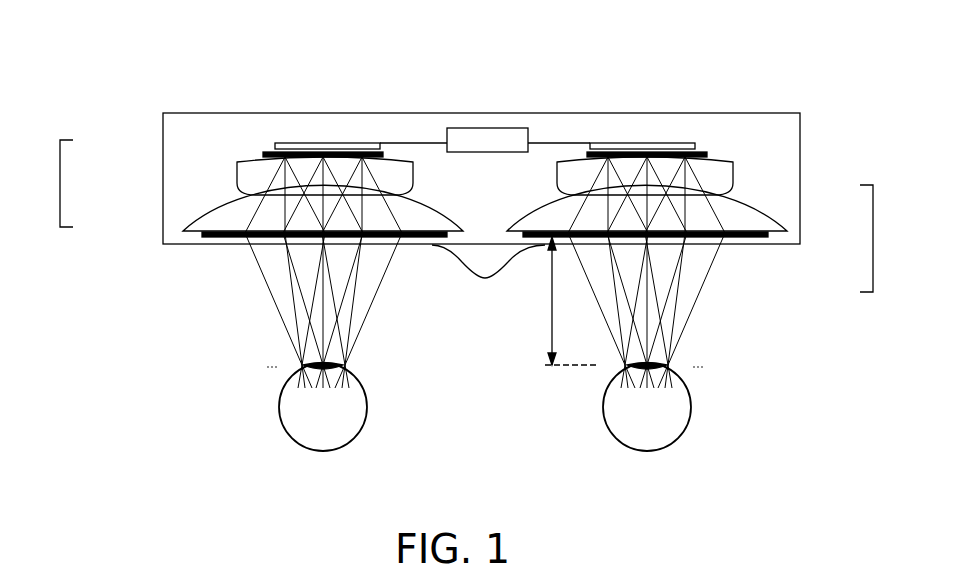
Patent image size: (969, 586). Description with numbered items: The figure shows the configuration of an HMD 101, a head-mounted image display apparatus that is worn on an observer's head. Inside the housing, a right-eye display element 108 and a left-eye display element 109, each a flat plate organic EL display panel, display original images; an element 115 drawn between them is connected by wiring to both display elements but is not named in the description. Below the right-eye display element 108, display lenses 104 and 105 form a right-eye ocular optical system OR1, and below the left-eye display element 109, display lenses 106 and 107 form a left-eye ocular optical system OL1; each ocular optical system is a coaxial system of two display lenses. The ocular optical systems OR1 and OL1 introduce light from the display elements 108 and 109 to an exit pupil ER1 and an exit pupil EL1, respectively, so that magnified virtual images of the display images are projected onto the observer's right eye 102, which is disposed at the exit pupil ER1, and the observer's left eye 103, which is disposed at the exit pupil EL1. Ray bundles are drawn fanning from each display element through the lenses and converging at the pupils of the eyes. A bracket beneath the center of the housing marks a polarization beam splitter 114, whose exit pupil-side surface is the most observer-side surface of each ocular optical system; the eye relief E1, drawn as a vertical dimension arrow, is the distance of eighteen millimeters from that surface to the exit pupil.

The HMD 101 is at (203, 133).
The observer's right eye 102 is at (660, 407).
The observer's left eye 103 is at (337, 407).
The display lens 104 is at (770, 232).
The display lens 105 is at (720, 163).
The display lens 106 is at (203, 225).
The display lens 107 is at (240, 178).
The right-eye display element 108 is at (700, 143).
The left-eye display element 109 is at (296, 143).
The polarization beam splitter 114 is at (488, 279).
The controller 115 is at (490, 128).
The left-eye ocular optical system OL1 is at (39, 183).
The right-eye ocular optical system OR1 is at (892, 238).
The eye relief E1 is at (570, 301).
The exit pupil EL1 is at (377, 366).
The exit pupil ER1 is at (592, 368).